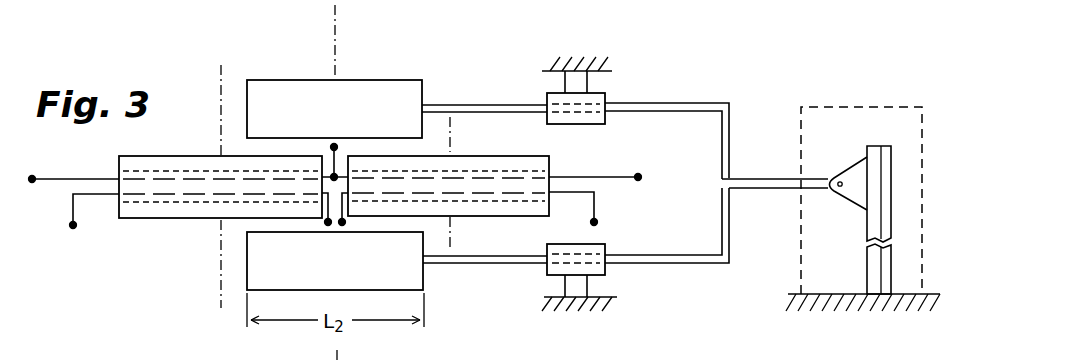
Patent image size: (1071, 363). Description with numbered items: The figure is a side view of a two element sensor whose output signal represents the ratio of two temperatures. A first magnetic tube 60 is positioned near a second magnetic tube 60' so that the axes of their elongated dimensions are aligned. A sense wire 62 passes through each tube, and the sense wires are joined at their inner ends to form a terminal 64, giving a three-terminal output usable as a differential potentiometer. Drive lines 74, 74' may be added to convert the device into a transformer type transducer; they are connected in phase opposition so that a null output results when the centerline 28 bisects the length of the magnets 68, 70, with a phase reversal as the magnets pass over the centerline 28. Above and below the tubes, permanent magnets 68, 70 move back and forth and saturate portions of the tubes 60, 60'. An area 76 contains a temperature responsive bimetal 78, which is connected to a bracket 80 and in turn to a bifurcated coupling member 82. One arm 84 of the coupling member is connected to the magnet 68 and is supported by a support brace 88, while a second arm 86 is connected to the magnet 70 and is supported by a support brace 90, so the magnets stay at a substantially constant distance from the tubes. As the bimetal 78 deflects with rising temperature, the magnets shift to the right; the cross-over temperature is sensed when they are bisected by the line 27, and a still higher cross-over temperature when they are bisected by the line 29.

The line 27 is at (221, 108).
The centerline 28 is at (335, 40).
The line 29 is at (451, 138).
The first magnetic tube 60 is at (220, 167).
The second magnetic tube 60' is at (468, 173).
The sense wire 62 is at (80, 179).
The terminal 64 is at (334, 147).
The magnet 68 is at (400, 117).
The magnet 70 is at (400, 265).
The drive line 74 is at (95, 223).
The drive line 74' is at (573, 216).
The area 76 is at (863, 107).
The bimetal 78 is at (888, 146).
The bracket 80 is at (853, 166).
The bifurcated coupling member 82 is at (760, 179).
The arm 84 is at (660, 103).
The arm 86 is at (673, 255).
The support brace 88 is at (547, 95).
The support brace 90 is at (605, 270).